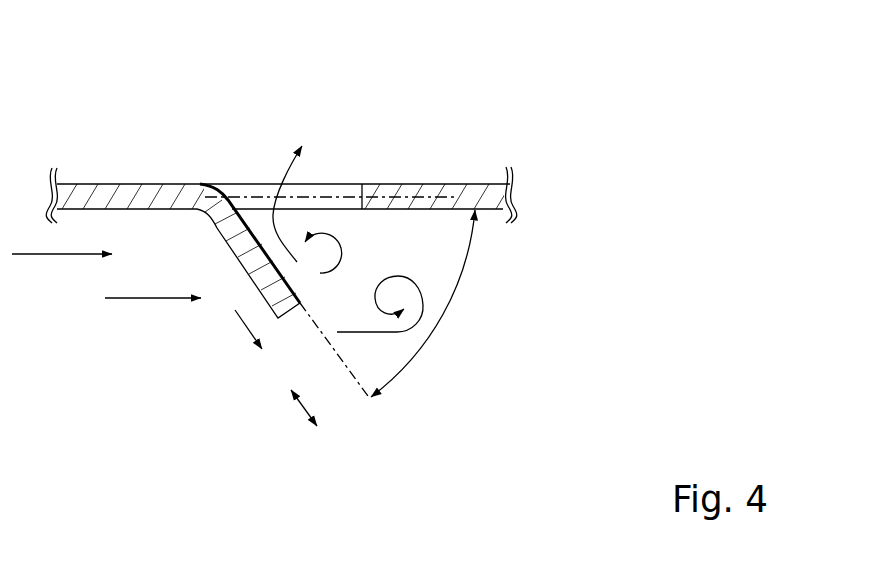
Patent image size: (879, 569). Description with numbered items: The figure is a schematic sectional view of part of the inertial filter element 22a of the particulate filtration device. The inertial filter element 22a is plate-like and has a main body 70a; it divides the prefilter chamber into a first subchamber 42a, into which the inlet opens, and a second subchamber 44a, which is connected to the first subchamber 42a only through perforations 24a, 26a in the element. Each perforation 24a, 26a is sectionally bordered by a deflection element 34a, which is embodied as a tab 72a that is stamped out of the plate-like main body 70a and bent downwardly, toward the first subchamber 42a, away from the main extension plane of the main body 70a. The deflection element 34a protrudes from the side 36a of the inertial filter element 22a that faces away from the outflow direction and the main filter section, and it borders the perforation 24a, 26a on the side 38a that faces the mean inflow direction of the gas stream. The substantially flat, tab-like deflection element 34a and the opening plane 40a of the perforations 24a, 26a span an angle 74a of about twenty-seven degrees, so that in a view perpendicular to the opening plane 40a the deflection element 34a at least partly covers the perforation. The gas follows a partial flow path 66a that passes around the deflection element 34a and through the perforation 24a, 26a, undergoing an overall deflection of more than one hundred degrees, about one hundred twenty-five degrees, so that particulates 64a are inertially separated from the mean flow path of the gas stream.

The inertial filter element 22a is at (167, 184).
The main body 70a is at (92, 184).
The second subchamber 44a is at (205, 149).
The perforation 24a is at (330, 128).
The perforation 26a is at (252, 174).
The opening plane 40a is at (340, 195).
The deflection element 34a is at (268, 286).
The tab 72a is at (281, 298).
The angle 74a is at (452, 305).
The side of the inertial filter element 36a is at (106, 298).
The side of the perforation 38a is at (139, 228).
The partial flow path 66a is at (282, 173).
The first subchamber 42a is at (278, 370).
The particulates 64a is at (295, 393).